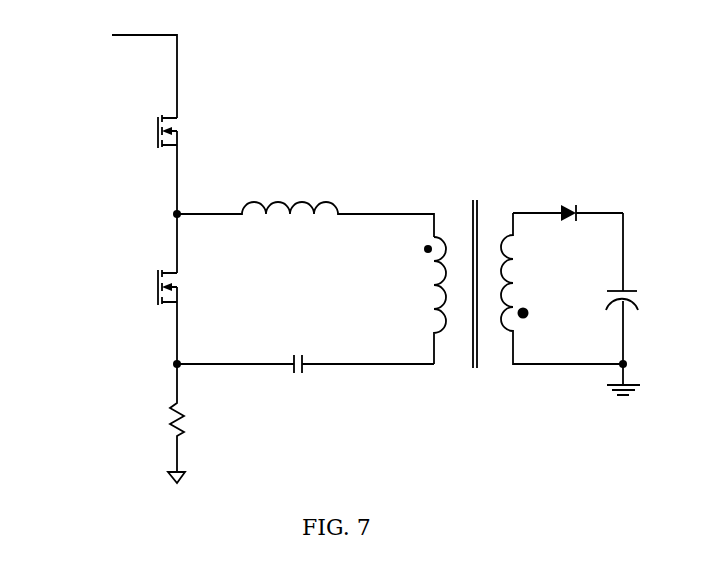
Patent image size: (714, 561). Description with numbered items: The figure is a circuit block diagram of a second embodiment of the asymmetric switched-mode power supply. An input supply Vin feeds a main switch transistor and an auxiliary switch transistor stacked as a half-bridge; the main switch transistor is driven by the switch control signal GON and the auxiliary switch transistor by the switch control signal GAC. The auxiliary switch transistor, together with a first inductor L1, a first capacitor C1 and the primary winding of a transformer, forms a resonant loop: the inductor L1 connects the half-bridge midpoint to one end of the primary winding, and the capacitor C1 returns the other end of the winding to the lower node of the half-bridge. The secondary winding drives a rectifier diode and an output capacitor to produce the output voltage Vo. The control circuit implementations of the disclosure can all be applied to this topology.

The input voltage Vin is at (112, 72).
The switch control signal of the main switch transistor GON is at (158, 145).
The switch control signal of the auxiliary switch transistor GAC is at (158, 302).
The inductor L1 is at (305, 223).
The capacitor C1 is at (305, 349).
The output voltage Vo is at (634, 239).